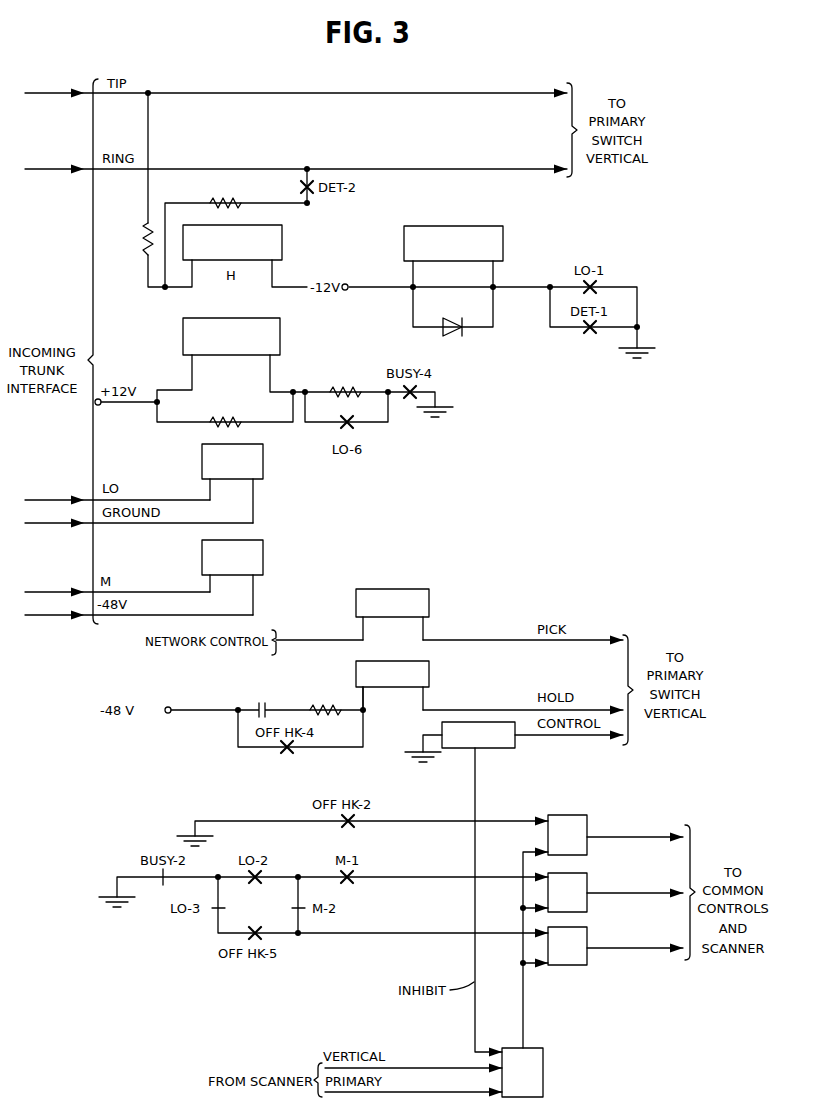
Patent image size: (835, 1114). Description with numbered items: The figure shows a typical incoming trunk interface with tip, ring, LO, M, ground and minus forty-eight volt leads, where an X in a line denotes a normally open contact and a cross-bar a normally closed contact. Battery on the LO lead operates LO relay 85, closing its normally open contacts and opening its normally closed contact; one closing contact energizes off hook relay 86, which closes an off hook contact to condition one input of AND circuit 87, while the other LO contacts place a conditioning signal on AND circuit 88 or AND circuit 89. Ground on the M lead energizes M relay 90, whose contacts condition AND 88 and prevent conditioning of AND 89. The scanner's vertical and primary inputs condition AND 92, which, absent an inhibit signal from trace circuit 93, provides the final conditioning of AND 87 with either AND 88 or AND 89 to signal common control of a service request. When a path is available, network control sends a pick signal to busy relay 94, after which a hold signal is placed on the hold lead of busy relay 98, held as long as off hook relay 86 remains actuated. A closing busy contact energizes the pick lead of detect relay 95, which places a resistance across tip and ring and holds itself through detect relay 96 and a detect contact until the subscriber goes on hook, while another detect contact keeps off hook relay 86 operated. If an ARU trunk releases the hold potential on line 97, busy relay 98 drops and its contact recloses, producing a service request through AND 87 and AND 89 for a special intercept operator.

The detect relay 96 is at (282, 228).
The off hook relay 86 is at (487, 226).
The detect relay 95 is at (281, 344).
The LO relay 85 is at (202, 456).
The M relay 90 is at (264, 560).
The busy relay 94 is at (430, 601).
The busy relay 98 is at (356, 670).
The hold line 97 is at (481, 709).
The trace circuit 93 is at (506, 750).
The AND circuit 87 is at (588, 815).
The AND circuit 88 is at (587, 905).
The AND circuit 89 is at (577, 966).
The AND circuit 92 is at (545, 1078).